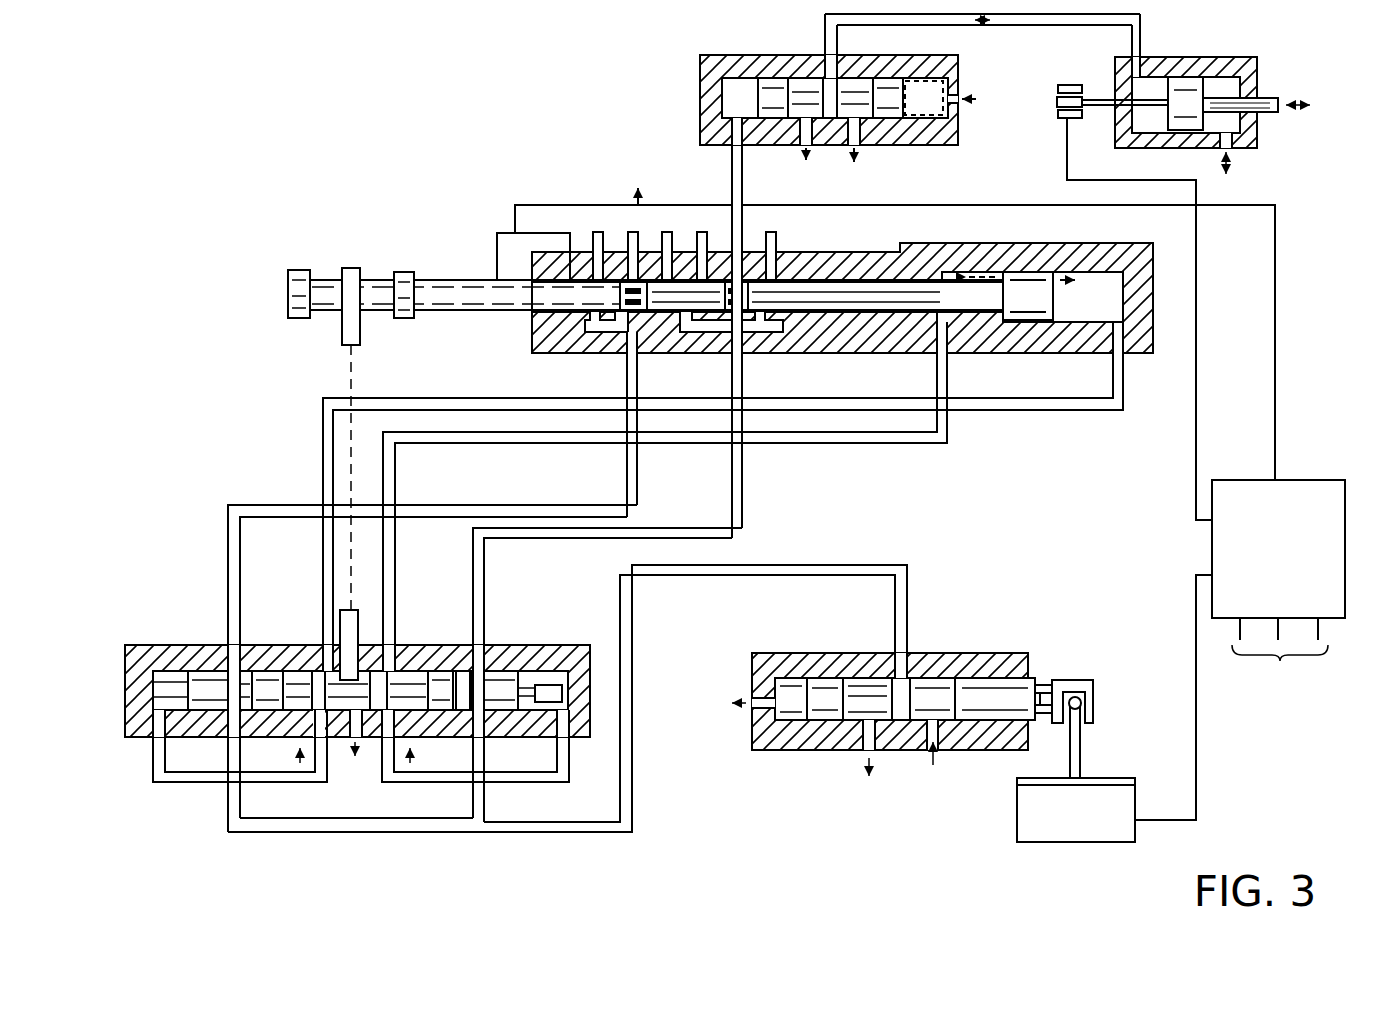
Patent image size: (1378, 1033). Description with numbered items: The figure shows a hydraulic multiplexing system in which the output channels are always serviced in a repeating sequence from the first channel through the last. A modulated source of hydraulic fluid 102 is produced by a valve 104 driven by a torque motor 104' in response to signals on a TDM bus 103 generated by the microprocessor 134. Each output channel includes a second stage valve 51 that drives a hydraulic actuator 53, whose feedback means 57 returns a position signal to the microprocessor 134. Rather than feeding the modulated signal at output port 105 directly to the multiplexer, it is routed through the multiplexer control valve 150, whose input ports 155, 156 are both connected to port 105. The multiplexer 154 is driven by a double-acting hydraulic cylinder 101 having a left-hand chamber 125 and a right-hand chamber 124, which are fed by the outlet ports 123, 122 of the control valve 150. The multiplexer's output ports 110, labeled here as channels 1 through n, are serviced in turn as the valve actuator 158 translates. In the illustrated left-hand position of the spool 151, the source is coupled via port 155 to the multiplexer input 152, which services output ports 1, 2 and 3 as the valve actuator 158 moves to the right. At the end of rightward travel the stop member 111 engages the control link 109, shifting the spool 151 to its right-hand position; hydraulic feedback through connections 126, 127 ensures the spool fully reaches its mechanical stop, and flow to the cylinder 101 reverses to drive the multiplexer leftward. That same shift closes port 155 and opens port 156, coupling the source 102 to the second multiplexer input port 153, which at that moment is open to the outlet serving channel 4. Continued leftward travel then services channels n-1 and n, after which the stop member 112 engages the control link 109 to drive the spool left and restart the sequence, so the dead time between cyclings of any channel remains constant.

The second stage valve 51 is at (958, 67).
The hydraulic actuator 53 is at (1240, 62).
The feedback means 57 is at (1072, 84).
The double-acting hydraulic cylinder 101 is at (1133, 253).
The modulated source of hydraulic fluid 102 is at (988, 616).
The time division multiplexed bus 103 is at (1197, 757).
The valve 104 is at (1025, 703).
The torque motor 104' is at (1099, 787).
The output port 105 is at (905, 664).
The control link 109 is at (351, 632).
The arm 110 is at (343, 320).
The stop member 111 is at (297, 268).
The stop member 112 is at (405, 272).
The outlet port 122 is at (325, 656).
The outlet port 123 is at (385, 660).
The right-hand chamber 124 is at (1066, 312).
The left-hand chamber 125 is at (963, 272).
The feedback connection 126 is at (309, 776).
The feedback connection 127 is at (437, 778).
The microprocessor 134 is at (1307, 480).
The multiplexer control valve 150 is at (524, 616).
The spool 151 is at (263, 678).
The multiplexer input 152 is at (642, 348).
The multiplexer input port 153 is at (752, 348).
The multiplexer 154 is at (564, 226).
The input port 155 is at (232, 736).
The input port 156 is at (487, 736).
The valve actuator 158 is at (468, 312).
The output port 1 is at (597, 242).
The output port 2 is at (632, 235).
The output port 3 is at (667, 242).
The output port 4 is at (769, 242).
The output channel n is at (702, 241).
The output channel n-1 is at (1003, 299).